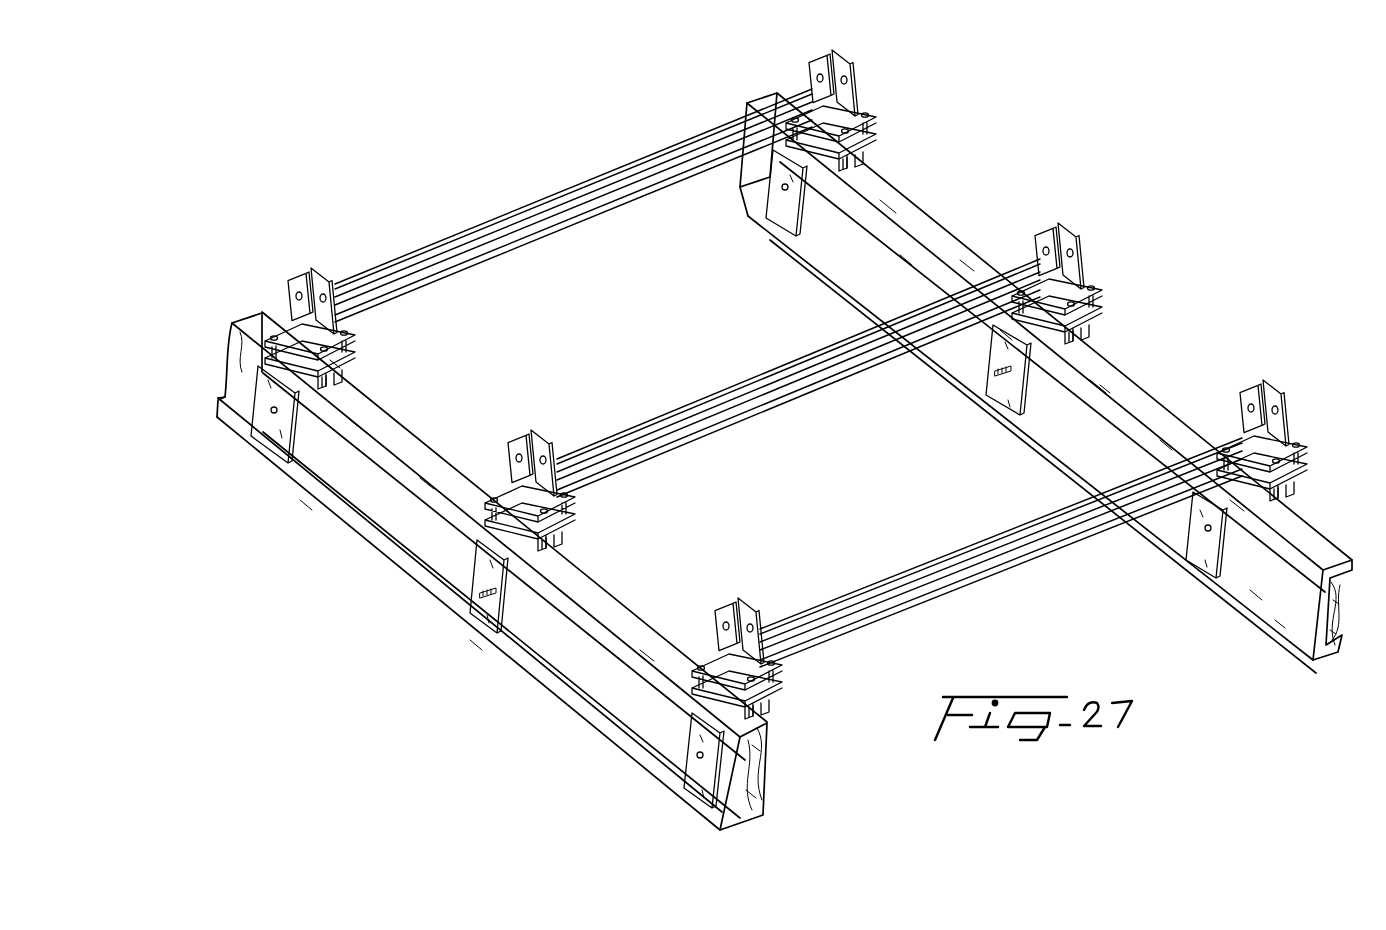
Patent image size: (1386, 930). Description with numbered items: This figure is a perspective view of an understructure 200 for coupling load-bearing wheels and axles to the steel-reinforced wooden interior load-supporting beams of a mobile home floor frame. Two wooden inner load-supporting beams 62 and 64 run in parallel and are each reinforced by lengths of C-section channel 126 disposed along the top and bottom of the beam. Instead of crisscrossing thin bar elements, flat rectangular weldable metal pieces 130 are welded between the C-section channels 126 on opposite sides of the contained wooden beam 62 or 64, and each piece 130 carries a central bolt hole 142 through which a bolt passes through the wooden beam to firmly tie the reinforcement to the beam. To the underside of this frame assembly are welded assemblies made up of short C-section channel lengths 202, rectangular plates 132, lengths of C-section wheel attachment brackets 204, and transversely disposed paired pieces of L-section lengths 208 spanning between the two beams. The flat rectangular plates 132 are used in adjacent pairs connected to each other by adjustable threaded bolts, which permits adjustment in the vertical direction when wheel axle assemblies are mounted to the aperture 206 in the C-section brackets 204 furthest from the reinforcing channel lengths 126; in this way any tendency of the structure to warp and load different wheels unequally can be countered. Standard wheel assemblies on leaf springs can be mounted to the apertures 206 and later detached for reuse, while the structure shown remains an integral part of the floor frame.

The rail support frame assembly 200 is at (517, 190).
The C-section channel 126 is at (413, 443).
The inner load supporting beam 62 is at (1343, 608).
The inner load supporting beam 64 is at (753, 760).
The flat rectangular piece 130 is at (778, 216).
The bolt hole 142 is at (268, 413).
The short C-section channel length 202 is at (342, 373).
The rectangular plate 132 is at (1087, 317).
The C-section wheel attachment bracket 204 is at (293, 286).
The aperture 206 is at (852, 96).
The L-section length 208 is at (563, 228).